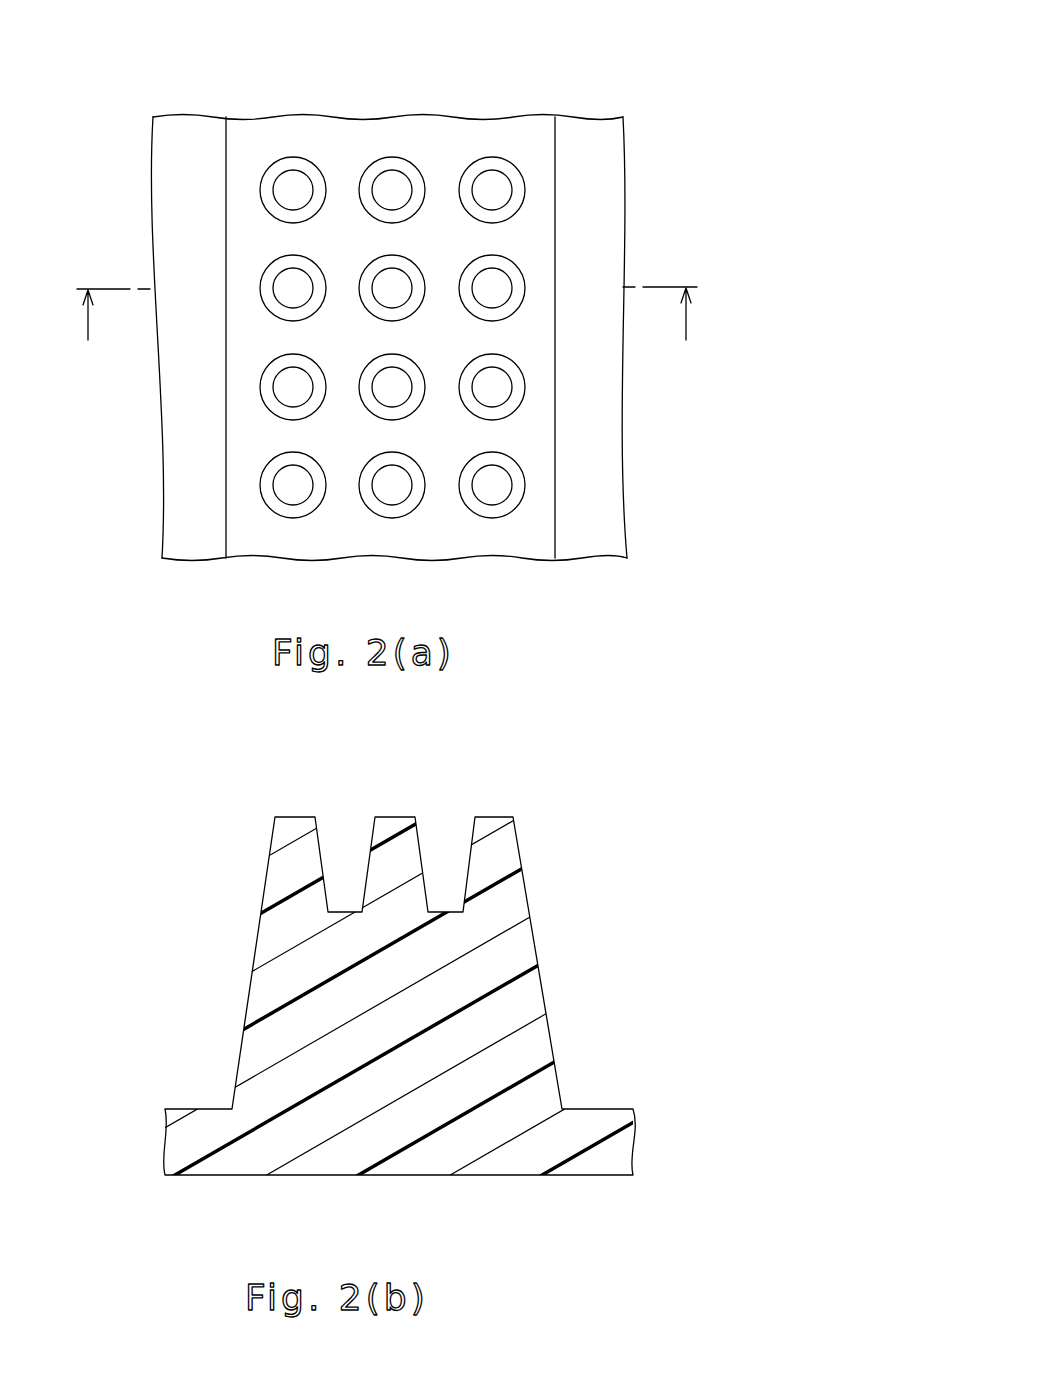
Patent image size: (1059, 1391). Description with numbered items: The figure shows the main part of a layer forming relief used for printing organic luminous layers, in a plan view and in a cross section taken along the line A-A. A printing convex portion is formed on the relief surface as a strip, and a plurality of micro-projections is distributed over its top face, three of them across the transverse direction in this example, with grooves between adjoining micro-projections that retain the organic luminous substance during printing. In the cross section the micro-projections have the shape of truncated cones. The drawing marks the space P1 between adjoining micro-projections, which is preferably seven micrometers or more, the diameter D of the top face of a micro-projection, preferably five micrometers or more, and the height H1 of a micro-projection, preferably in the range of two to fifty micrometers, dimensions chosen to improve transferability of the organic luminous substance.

The space between adjoining micro-projections P1 is at (375, 812).
The diameter of the top face of the micro-projection D is at (513, 812).
The height of the micro-projection H1 is at (525, 817).